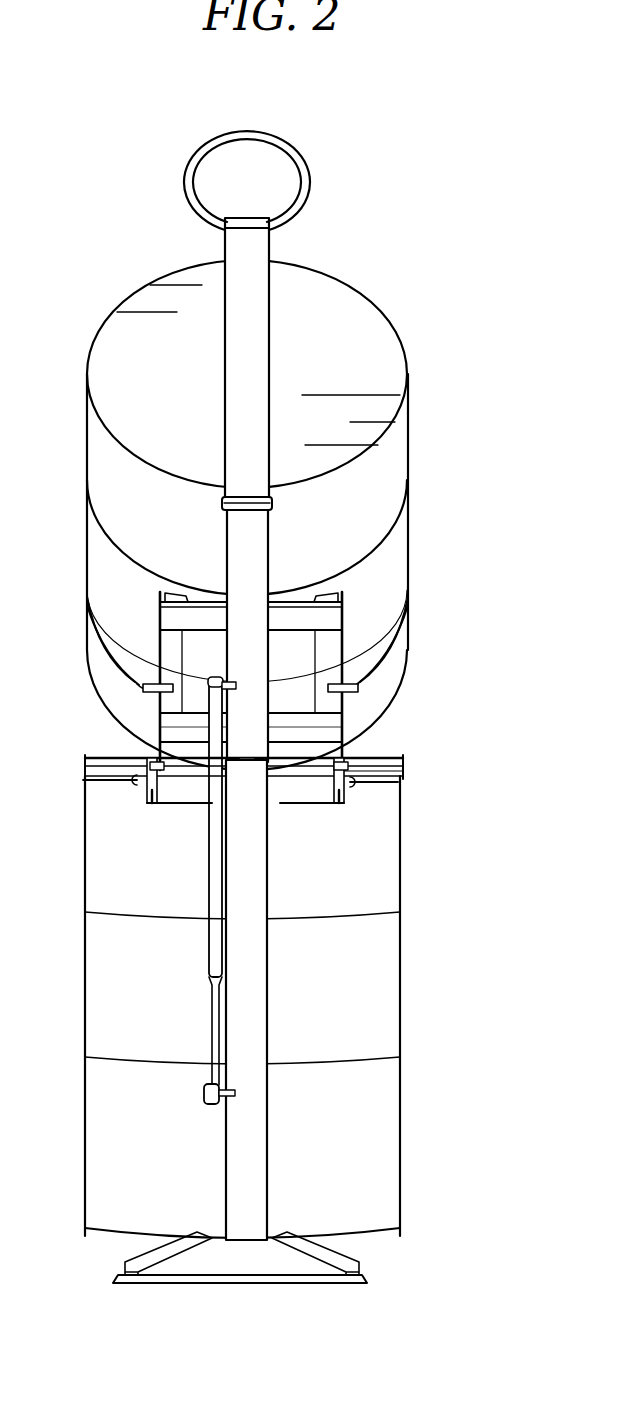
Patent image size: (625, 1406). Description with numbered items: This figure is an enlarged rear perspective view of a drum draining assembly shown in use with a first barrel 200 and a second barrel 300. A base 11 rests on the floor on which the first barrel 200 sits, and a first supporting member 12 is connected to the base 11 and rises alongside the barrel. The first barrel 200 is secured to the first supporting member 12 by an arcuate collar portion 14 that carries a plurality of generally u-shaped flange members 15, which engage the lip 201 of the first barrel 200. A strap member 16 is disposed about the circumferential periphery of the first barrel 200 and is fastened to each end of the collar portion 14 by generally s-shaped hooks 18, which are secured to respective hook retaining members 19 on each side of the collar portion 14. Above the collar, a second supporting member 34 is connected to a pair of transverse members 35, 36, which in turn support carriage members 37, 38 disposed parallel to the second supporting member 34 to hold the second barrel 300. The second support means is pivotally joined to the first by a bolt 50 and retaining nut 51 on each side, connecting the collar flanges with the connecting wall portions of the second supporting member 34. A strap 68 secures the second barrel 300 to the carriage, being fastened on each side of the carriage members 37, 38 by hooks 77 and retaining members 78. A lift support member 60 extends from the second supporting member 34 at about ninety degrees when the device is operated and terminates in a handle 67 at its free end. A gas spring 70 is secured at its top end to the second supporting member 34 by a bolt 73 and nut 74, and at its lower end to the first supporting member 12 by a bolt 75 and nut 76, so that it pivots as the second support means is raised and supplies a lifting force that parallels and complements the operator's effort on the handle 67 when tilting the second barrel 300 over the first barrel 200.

The base 11 is at (229, 1268).
The first supporting member 12 is at (231, 1024).
The arcuate collar portion 14 is at (272, 796).
The flange members 15 is at (152, 760).
The strap member 16 is at (85, 778).
The s-shaped hooks 18 is at (140, 782).
The hook retaining members 19 is at (152, 803).
The second supporting member 34 is at (233, 567).
The transverse member 35 is at (328, 698).
The transverse member 36 is at (304, 681).
The carriage member 37 is at (178, 598).
The carriage member 38 is at (330, 598).
The bolt 50 is at (400, 769).
The retaining nut 51 is at (322, 790).
The lift support member 60 is at (233, 354).
The handle 67 is at (300, 152).
The strap 68 is at (92, 640).
The gas spring 70 is at (210, 840).
The bolt 73 is at (210, 680).
The nut 74 is at (232, 689).
The bolt 75 is at (205, 1093).
The nut 76 is at (222, 1110).
The hooks 77 is at (143, 690).
The retaining members 78 is at (160, 685).
The first barrel 200 is at (119, 957).
The lip 201 is at (405, 758).
The second barrel 300 is at (340, 510).